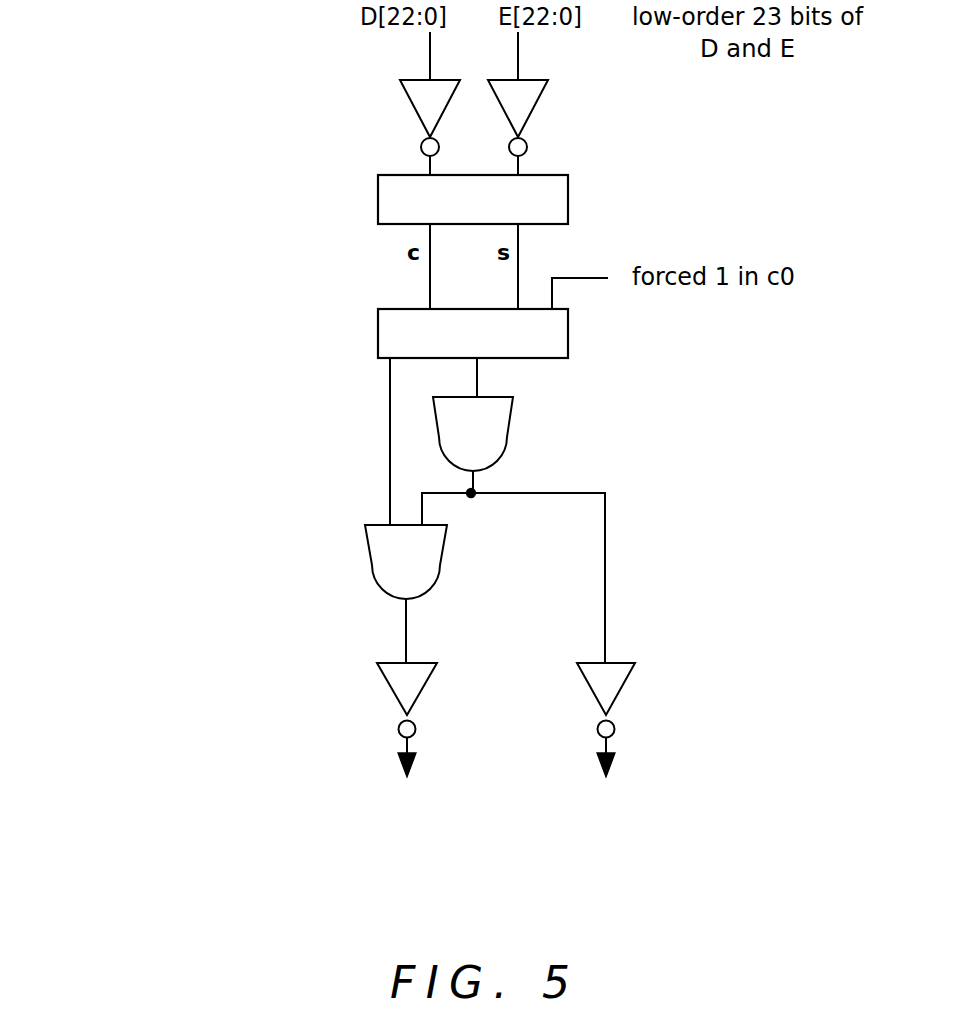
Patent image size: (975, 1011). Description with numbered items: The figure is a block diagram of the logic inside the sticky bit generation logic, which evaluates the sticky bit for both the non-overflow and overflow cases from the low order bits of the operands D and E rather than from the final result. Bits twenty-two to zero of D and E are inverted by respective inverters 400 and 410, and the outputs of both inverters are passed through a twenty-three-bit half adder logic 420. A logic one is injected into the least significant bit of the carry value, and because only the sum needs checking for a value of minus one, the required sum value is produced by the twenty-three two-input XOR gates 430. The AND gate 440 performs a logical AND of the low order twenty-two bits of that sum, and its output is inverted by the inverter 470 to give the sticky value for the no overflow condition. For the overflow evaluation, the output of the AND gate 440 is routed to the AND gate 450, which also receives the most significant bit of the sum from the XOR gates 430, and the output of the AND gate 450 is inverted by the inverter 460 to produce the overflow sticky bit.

The inverter 400 is at (413, 108).
The inverter 410 is at (535, 108).
The 23-bit half adder logic 420 is at (378, 193).
The 23 two-input XOR gates 430 is at (378, 334).
The AND gate 440 is at (513, 405).
The AND gate 450 is at (445, 568).
The inverter 460 is at (423, 688).
The inverter 470 is at (622, 690).